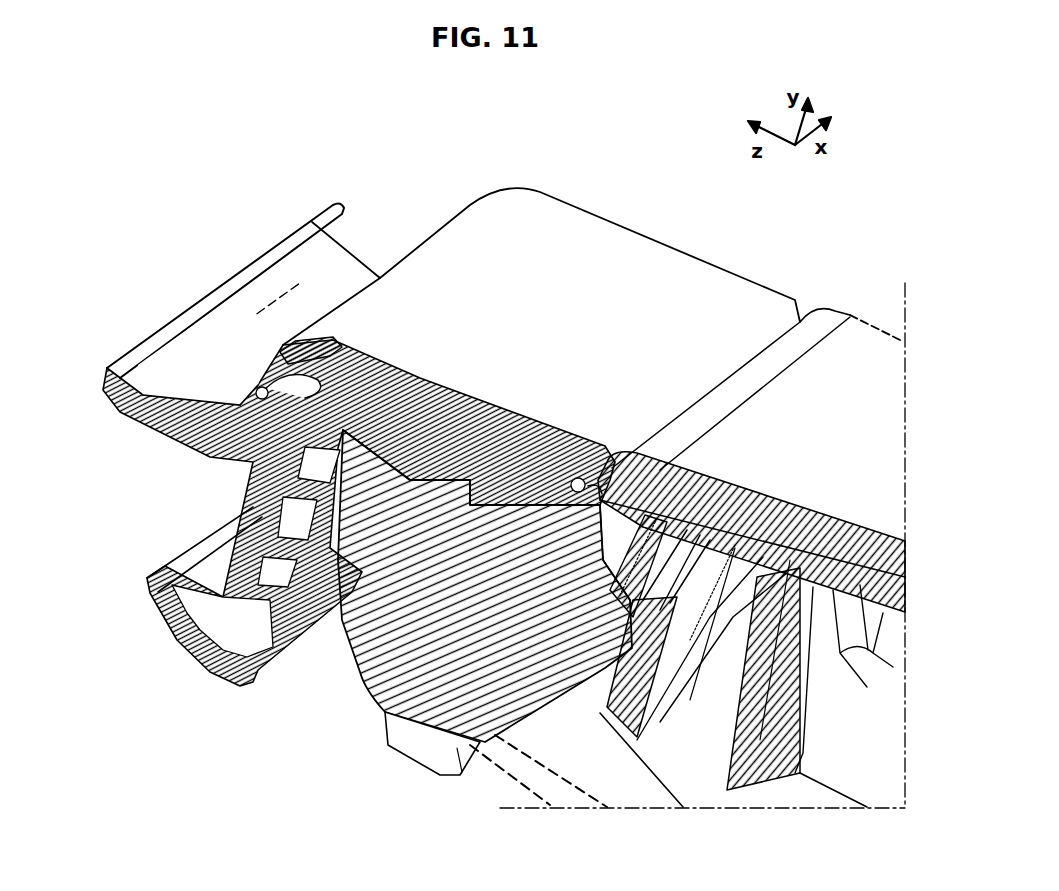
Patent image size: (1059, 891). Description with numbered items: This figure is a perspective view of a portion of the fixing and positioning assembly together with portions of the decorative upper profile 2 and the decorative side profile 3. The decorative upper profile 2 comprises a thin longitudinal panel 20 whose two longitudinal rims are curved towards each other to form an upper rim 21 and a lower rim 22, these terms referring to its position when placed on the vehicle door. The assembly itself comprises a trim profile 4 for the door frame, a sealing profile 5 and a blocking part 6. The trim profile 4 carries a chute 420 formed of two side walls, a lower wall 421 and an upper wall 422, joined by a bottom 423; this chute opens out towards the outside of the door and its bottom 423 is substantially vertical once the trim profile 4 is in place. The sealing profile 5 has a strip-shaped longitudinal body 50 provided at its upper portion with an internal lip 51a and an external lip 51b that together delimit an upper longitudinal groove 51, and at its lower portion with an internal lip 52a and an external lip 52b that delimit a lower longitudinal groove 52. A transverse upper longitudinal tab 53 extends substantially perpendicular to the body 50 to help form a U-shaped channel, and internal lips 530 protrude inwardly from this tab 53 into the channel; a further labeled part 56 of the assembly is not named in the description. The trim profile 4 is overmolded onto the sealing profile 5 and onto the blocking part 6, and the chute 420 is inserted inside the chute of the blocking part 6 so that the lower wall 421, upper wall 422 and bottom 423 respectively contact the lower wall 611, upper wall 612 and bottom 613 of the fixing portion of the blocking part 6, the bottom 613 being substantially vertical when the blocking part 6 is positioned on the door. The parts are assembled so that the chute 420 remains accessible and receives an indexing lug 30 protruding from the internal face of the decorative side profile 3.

The decorative upper profile 2 is at (590, 250).
The thin longitudinal panel 20 is at (616, 296).
The upper rim 21 is at (268, 405).
The lower rim 22 is at (600, 500).
The decorative side profile 3 is at (699, 570).
The indexing lug 30 is at (638, 560).
The trim profile 4 is at (402, 783).
The chute 420 is at (593, 655).
The lower wall 421 is at (630, 656).
The upper wall 422 is at (573, 620).
The bottom 423 is at (587, 672).
The sealing profile 5 is at (149, 661).
The longitudinal body 50 is at (396, 413).
The upper longitudinal groove 51 is at (287, 392).
The internal lip 51a is at (255, 405).
The external lip 51b is at (282, 360).
The lower longitudinal groove 52 is at (548, 469).
The internal lip 52a is at (558, 588).
The external lip 52b is at (600, 457).
The upper longitudinal tab 53 is at (225, 580).
The internal lip 530 is at (294, 618).
The extension plate 56 is at (275, 318).
The blocking part 6 is at (346, 697).
The lower wall 611 is at (668, 620).
The upper wall 612 is at (548, 600).
The bottom 613 is at (563, 712).